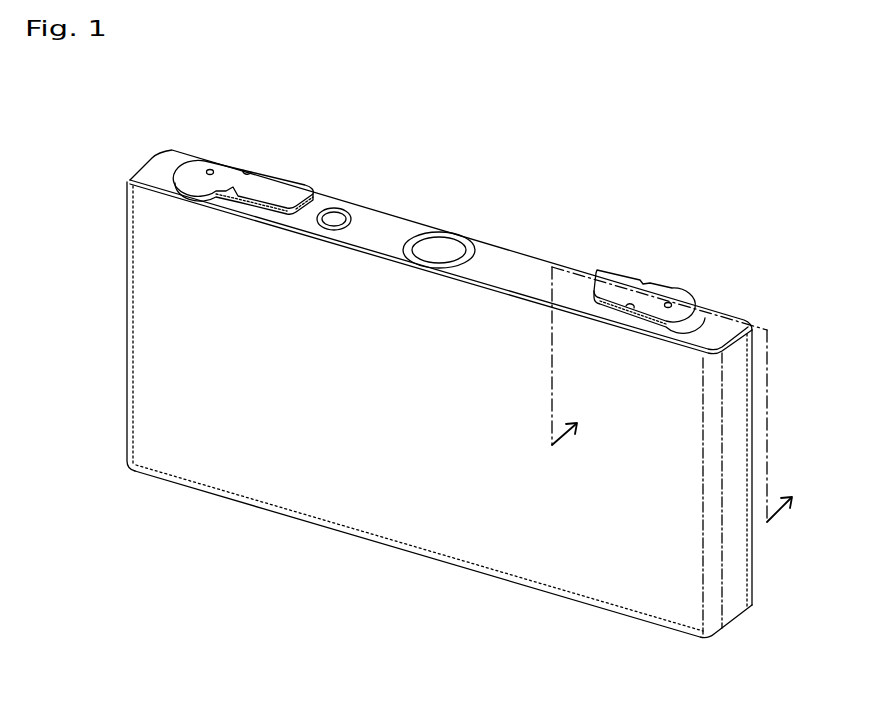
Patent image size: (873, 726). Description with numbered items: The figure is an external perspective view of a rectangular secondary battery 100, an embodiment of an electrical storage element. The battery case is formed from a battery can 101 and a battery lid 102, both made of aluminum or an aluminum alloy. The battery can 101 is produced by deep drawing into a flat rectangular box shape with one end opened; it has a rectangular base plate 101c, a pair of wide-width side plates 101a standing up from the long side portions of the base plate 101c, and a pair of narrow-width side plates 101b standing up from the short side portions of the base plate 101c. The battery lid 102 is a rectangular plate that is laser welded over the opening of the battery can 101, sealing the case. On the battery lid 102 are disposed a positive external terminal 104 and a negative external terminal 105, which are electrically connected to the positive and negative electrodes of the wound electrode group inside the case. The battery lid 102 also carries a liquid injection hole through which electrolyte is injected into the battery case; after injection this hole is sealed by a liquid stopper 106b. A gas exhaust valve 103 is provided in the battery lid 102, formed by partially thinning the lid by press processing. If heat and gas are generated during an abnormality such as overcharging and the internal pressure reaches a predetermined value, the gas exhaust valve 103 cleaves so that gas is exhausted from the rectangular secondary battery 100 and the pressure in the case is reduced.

The rectangular secondary battery 100 is at (746, 109).
The battery can 101 is at (190, 315).
The wide-width side plate 101a is at (268, 417).
The narrow-width side plate 101b is at (738, 575).
The base plate 101c is at (400, 550).
The battery lid 102 is at (533, 272).
The gas exhaust valve 103 is at (450, 250).
The positive external terminal 104 is at (231, 180).
The negative external terminal 105 is at (673, 293).
The liquid stopper 106b is at (334, 218).